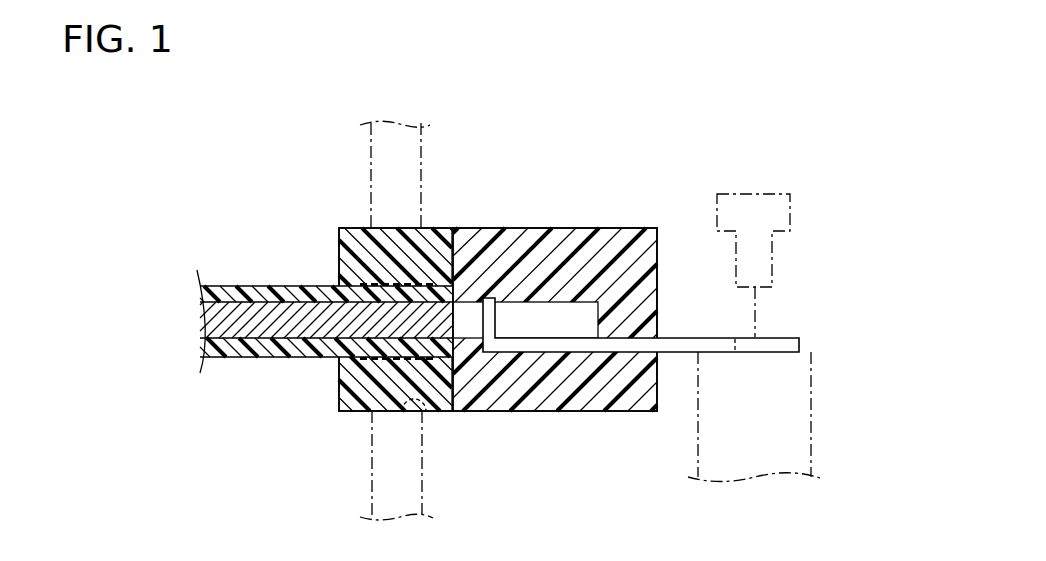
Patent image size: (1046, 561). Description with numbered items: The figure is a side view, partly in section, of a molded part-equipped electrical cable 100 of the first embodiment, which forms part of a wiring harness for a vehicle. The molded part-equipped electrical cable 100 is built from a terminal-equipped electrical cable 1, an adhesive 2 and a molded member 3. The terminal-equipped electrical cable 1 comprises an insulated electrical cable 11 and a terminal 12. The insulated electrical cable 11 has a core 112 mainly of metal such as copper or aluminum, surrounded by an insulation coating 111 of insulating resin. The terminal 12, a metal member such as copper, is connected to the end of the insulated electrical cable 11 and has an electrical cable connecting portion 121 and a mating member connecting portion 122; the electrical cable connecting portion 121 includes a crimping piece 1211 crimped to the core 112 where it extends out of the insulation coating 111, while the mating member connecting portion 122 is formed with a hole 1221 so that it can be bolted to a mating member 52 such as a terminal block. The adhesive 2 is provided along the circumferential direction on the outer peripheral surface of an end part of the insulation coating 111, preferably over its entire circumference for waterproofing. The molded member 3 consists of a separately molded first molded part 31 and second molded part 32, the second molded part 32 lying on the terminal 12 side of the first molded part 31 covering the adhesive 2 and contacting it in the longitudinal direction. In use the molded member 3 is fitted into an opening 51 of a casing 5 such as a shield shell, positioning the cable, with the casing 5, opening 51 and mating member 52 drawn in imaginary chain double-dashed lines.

The molded part-equipped electrical cable 100 is at (745, 98).
The terminal-equipped electrical cable 1 is at (176, 292).
The insulated electrical cable 11 is at (267, 282).
The insulation coating 111 is at (218, 358).
The core 112 is at (263, 339).
The terminal 12 is at (673, 360).
The electrical cable connecting portion 121 is at (560, 348).
The crimping piece 1211 is at (490, 320).
The mating member connecting portion 122 is at (688, 343).
The hole 1221 is at (776, 347).
The adhesive 2 is at (367, 282).
The molded member 3 is at (591, 223).
The first molded part 31 is at (348, 400).
The second molded part 32 is at (620, 413).
The casing 5 is at (430, 140).
The opening 51 is at (430, 413).
The mating member 52 is at (812, 413).